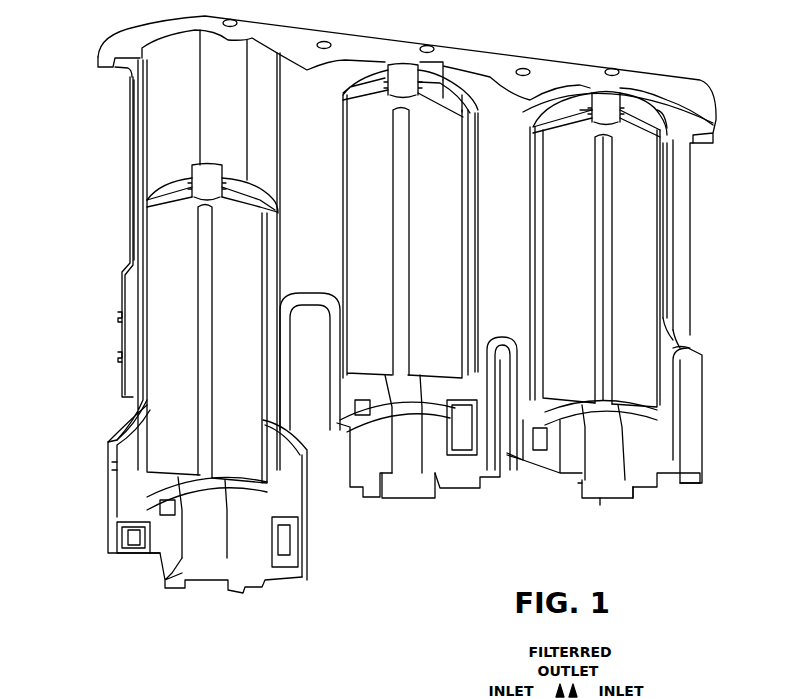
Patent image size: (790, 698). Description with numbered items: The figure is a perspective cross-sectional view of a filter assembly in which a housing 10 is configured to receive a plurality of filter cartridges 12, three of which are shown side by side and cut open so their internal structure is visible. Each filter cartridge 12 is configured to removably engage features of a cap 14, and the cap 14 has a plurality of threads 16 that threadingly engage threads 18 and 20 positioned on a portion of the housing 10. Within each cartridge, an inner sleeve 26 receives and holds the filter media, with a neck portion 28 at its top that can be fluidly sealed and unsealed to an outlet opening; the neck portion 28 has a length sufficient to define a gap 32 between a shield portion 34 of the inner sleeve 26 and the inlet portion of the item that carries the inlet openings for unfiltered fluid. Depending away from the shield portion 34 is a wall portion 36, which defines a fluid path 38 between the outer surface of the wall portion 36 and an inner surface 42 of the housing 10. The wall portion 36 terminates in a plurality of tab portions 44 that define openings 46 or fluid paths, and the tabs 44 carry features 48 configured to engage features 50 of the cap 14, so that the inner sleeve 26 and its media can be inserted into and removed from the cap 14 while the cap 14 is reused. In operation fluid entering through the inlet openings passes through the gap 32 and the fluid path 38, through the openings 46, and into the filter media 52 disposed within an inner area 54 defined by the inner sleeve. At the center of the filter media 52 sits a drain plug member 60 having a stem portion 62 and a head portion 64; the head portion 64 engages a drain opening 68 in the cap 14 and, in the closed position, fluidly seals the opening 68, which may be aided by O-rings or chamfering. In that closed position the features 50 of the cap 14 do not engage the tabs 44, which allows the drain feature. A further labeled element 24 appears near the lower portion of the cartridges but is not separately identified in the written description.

The housing 10 is at (690, 282).
The filter cartridges 12 is at (126, 408).
The cap 14 is at (300, 568).
The threads 16 is at (133, 462).
The threads 18 is at (120, 317).
The threads 20 is at (120, 357).
The bracket 24 is at (543, 445).
The inner sleeve 26 is at (686, 360).
The neck portion 28 is at (190, 178).
The gap 32 is at (590, 110).
The shield portion 34 is at (655, 117).
The wall portion 36 is at (672, 340).
The fluid path 38 is at (478, 78).
The inner surface 42 is at (147, 110).
The tab portions 44 is at (147, 530).
The openings 46 is at (160, 500).
The features 48 is at (147, 550).
The features 50 is at (282, 575).
The filter media 52 is at (363, 133).
The inner area 54 is at (690, 418).
The drain plug member 60 is at (574, 458).
The stem portion 62 is at (603, 252).
The head portion 64 is at (605, 478).
The drain opening 68 is at (233, 583).